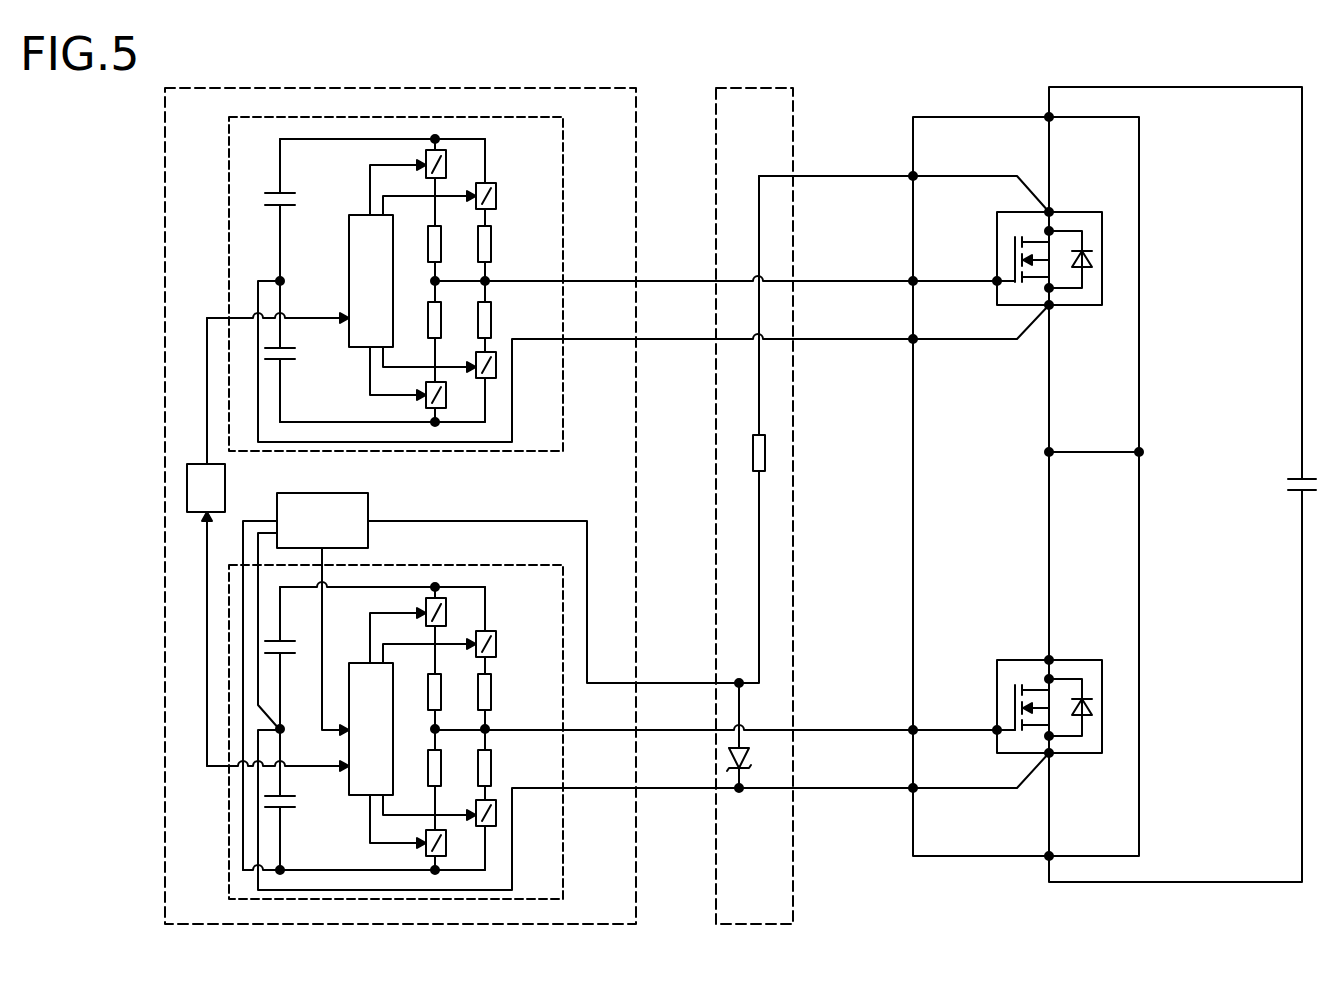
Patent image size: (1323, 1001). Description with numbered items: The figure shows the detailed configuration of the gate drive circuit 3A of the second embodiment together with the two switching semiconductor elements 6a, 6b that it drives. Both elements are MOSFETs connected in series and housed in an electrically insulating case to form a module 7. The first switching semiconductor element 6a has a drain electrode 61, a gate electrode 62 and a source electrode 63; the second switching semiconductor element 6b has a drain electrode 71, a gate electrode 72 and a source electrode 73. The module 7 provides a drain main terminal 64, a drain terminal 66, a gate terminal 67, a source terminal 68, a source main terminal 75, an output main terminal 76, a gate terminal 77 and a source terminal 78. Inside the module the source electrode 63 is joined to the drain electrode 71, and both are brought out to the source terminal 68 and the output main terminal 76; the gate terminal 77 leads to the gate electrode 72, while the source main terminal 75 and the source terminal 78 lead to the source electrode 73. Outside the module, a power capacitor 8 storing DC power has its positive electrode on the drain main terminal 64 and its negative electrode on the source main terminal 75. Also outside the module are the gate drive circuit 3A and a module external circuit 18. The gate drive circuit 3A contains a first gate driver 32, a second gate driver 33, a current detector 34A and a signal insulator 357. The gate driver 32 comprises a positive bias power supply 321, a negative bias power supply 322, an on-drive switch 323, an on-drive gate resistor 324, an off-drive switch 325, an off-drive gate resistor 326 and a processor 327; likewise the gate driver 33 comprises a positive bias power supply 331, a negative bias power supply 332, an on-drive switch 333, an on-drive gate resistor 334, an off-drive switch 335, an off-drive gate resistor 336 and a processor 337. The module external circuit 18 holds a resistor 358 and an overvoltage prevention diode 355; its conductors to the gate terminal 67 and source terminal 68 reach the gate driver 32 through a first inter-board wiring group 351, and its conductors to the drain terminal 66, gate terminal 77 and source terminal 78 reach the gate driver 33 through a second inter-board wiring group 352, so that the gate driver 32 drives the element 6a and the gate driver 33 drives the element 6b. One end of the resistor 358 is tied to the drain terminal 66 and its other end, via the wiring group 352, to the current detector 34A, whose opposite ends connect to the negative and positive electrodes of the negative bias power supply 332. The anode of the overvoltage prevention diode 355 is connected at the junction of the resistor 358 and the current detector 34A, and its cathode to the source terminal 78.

The gate drive circuit 3A is at (570, 88).
The gate driver 32 is at (229, 128).
The positive bias power supply 321 is at (272, 192).
The negative bias power supply 322 is at (272, 347).
The on-drive switch 323 is at (496, 184).
The on-drive gate resistor 324 is at (492, 246).
The off-drive switch 325 is at (497, 367).
The off-drive gate resistor 326 is at (492, 322).
The processor 327 is at (352, 348).
The gate driver 33 is at (229, 577).
The positive bias power supply 331 is at (200, 629).
The negative bias power supply 332 is at (200, 782).
The on-drive switch 333 is at (510, 624).
The on-drive gate resistor 334 is at (511, 685).
The off-drive switch 335 is at (550, 818).
The off-drive gate resistor 336 is at (511, 761).
The processor 337 is at (349, 756).
The current detector 34A is at (310, 493).
The signal insulator 357 is at (187, 488).
The first inter-board wiring group 351 is at (645, 263).
The second inter-board wiring group 352 is at (645, 665).
The overvoltage prevention diode 355 is at (734, 762).
The resistor 358 is at (752, 452).
The module external circuit 18 is at (766, 88).
The module 7 is at (930, 117).
The power capacitor 8 is at (1302, 493).
The drain main terminal 64 is at (1049, 117).
The drain terminal 66 is at (913, 176).
The gate terminal 67 is at (913, 281).
The source terminal 68 is at (913, 339).
The drain electrode 61 is at (1049, 212).
The gate electrode 62 is at (997, 281).
The source electrode 63 is at (1049, 305).
The switching semiconductor element 6a is at (1102, 258).
The output main terminal 76 is at (1139, 452).
The drain electrode 71 is at (1049, 660).
The gate electrode 72 is at (997, 730).
The source electrode 73 is at (1049, 753).
The switching semiconductor element 6b is at (1102, 708).
The gate terminal 77 is at (913, 730).
The source terminal 78 is at (913, 788).
The source main terminal 75 is at (1049, 856).